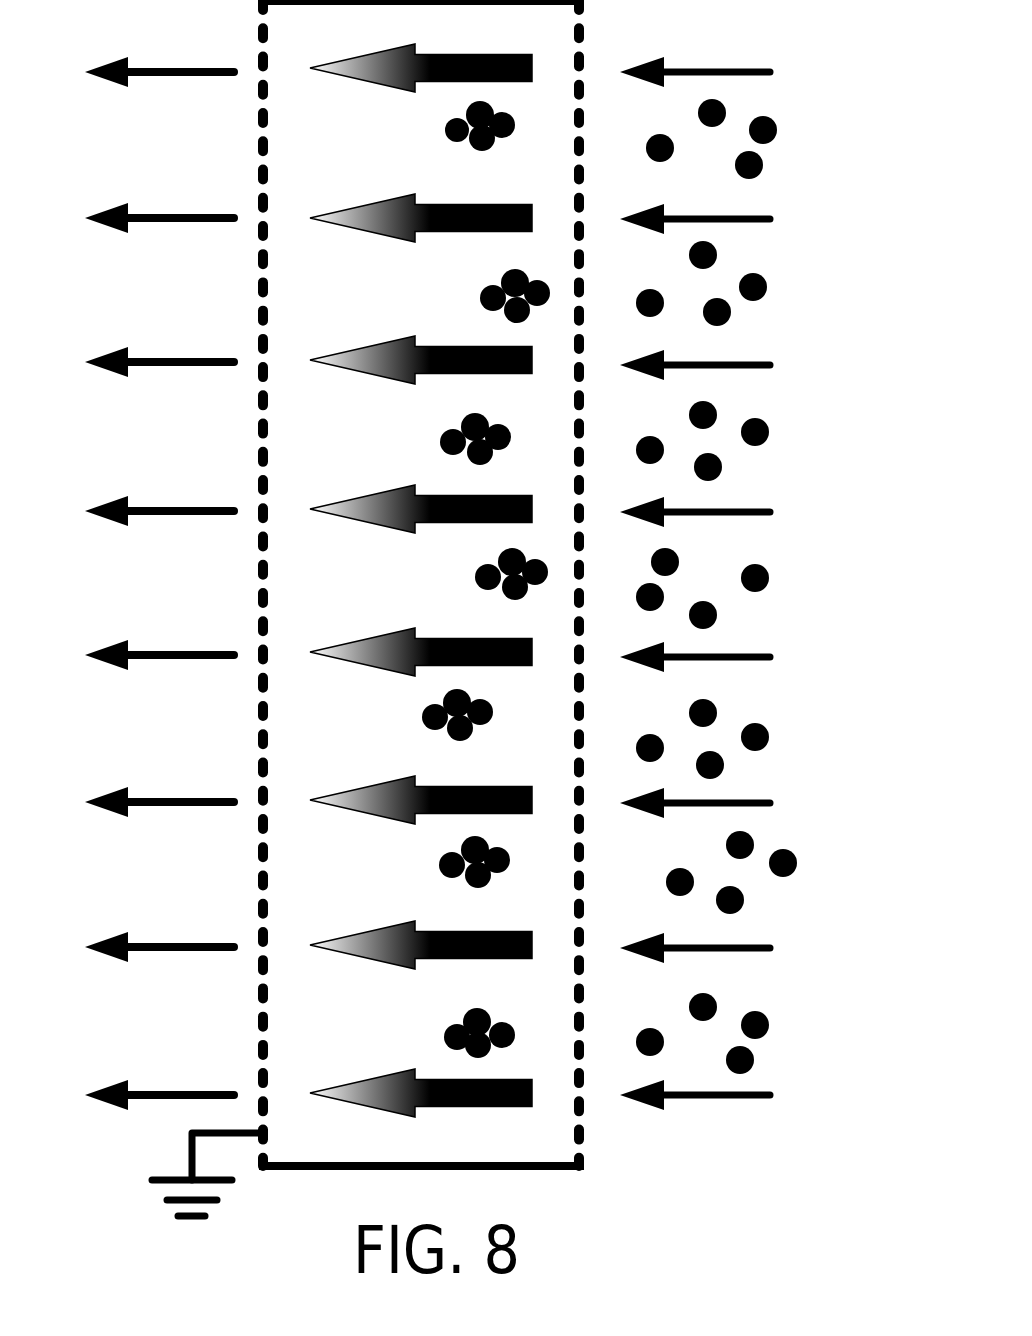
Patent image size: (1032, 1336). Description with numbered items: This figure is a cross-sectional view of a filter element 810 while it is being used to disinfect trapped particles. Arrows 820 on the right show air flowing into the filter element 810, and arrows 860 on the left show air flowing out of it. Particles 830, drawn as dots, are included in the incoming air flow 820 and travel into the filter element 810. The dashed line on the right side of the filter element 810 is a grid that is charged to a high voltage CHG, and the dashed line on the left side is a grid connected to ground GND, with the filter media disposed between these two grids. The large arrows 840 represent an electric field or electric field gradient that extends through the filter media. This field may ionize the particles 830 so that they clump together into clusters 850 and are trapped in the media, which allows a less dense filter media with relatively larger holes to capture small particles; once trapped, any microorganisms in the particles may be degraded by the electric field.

The filter element 810 is at (540, 1168).
The arrows illustrating air flowing into the filter element 820 is at (733, 75).
The particles 830 is at (767, 280).
The large arrows representing electric field 840 is at (405, 225).
The clusters 850 is at (447, 130).
The arrows illustrating air flowing out of the filter element 860 is at (159, 583).
The grid charged to a high voltage CHG is at (582, 1127).
The grid connected to ground GND is at (151, 1174).